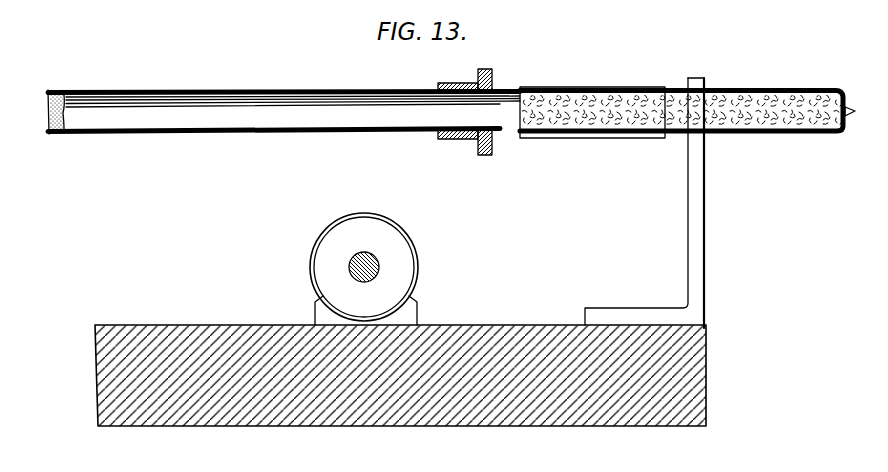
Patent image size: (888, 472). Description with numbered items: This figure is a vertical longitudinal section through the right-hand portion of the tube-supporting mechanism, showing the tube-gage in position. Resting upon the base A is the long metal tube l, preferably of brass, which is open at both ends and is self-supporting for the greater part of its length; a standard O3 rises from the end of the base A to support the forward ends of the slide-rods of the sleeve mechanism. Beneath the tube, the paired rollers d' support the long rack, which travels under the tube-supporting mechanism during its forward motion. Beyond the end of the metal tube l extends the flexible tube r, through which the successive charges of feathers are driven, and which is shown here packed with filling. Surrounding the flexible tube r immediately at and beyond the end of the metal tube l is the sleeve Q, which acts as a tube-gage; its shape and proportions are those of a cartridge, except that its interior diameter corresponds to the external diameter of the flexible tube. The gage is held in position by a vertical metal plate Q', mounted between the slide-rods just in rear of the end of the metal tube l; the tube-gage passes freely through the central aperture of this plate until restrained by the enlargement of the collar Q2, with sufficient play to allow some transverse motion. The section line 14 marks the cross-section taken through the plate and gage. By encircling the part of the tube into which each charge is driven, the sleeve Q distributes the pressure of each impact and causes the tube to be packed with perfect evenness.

The base A is at (707, 376).
The standard O3 is at (704, 183).
The paired rollers d' is at (364, 269).
The metal tube l is at (80, 128).
The outer tube r is at (48, 109).
The sleeve Q is at (592, 115).
The collar Q2 is at (449, 83).
The metal plate Q' is at (465, 153).
The section line 14 is at (537, 165).